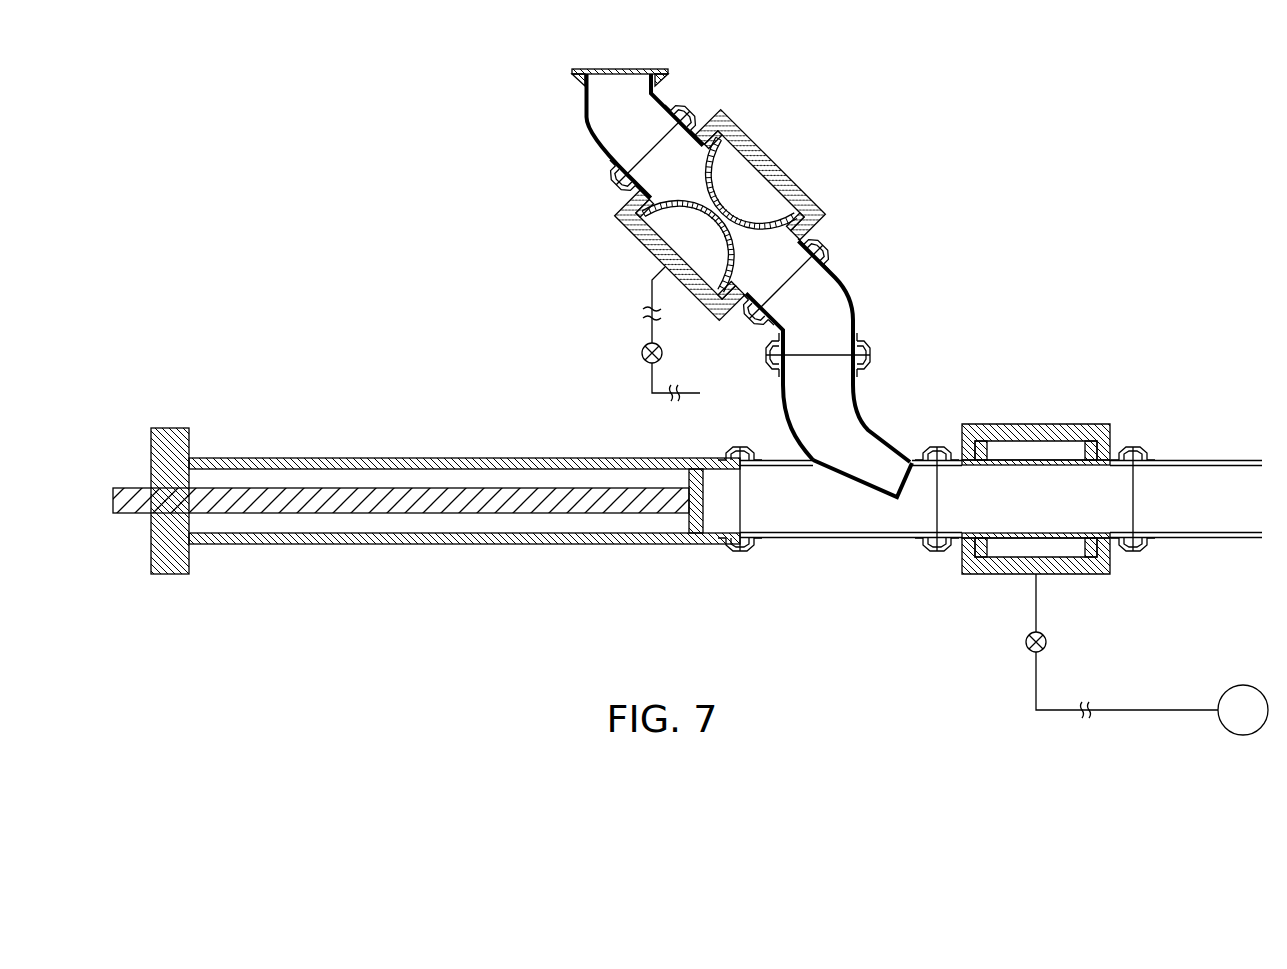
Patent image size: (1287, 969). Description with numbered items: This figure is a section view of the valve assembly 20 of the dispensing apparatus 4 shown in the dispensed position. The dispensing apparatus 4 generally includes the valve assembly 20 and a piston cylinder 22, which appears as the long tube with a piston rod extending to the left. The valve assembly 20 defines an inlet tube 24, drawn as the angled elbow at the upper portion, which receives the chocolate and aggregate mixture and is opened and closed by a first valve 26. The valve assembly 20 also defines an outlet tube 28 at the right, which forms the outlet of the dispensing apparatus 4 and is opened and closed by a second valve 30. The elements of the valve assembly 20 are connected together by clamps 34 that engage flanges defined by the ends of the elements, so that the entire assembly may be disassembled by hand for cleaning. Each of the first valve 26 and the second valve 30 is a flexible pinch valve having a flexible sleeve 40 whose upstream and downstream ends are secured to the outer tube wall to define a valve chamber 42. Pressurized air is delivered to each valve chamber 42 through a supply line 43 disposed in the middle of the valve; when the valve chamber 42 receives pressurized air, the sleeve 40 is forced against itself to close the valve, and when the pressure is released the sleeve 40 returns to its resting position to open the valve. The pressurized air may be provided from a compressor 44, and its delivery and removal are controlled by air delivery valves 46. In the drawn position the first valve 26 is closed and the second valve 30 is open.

The dispensing apparatus 4 is at (430, 298).
The valve assembly 20 is at (893, 440).
The piston cylinder 22 is at (392, 458).
The inlet tube 24 is at (583, 129).
The first valve 26 is at (805, 196).
The outlet tube 28 is at (1170, 460).
The second valve 30 is at (1045, 423).
The clamp 34 is at (690, 97).
The flexible sleeve 40 is at (684, 206).
The valve chamber 42 is at (765, 185).
The supply line 43 is at (653, 301).
The compressor 44 is at (1238, 695).
The air delivery valve 46 is at (643, 352).